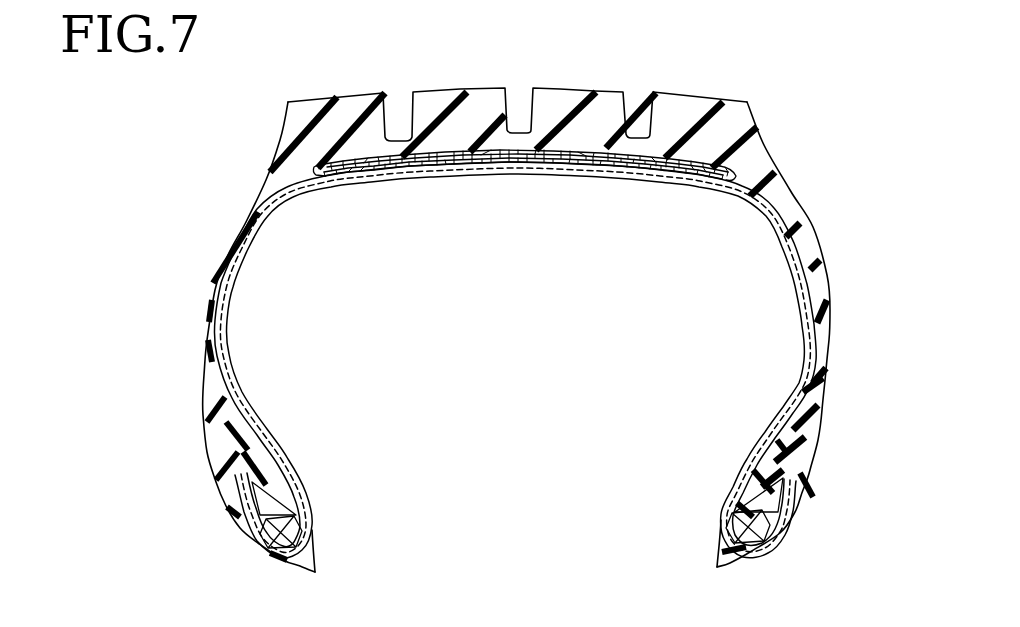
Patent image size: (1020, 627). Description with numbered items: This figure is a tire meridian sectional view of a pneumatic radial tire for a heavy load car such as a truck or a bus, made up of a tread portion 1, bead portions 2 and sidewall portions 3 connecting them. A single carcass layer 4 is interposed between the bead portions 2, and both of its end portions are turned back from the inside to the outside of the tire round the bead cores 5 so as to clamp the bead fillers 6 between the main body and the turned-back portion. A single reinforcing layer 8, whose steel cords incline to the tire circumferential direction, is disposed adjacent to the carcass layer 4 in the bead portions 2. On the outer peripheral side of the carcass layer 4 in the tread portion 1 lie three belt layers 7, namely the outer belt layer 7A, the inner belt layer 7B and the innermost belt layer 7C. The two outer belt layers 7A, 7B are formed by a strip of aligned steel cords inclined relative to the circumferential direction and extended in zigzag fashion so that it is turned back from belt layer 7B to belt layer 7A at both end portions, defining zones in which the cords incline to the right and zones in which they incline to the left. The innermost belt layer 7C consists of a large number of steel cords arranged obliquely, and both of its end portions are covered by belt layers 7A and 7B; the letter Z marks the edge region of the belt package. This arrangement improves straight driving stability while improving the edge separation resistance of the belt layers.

The tread portion 1 is at (687, 92).
The bead portion 2 is at (311, 496).
The sidewall portion 3 is at (203, 346).
The carcass layer 4 is at (803, 245).
The bead core 5 is at (272, 550).
The bead filler 6 is at (830, 292).
The belt layer 7 is at (587, 150).
The outer belt layer 7A is at (379, 153).
The inner belt layer 7B is at (440, 185).
The innermost belt layer 7C is at (397, 187).
The reinforcing layer 8 is at (308, 522).
The belt edge Z is at (317, 180).